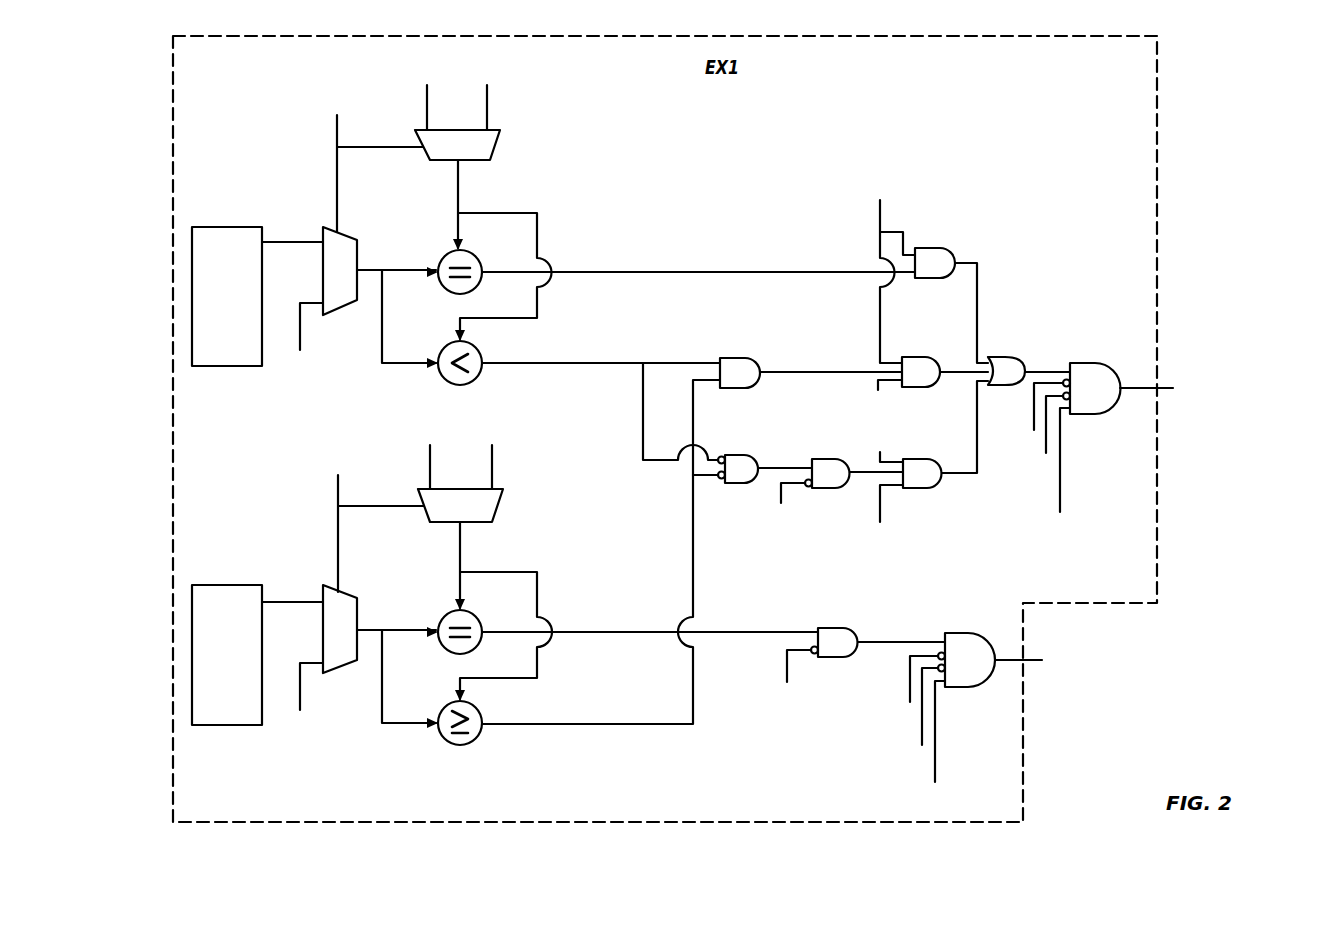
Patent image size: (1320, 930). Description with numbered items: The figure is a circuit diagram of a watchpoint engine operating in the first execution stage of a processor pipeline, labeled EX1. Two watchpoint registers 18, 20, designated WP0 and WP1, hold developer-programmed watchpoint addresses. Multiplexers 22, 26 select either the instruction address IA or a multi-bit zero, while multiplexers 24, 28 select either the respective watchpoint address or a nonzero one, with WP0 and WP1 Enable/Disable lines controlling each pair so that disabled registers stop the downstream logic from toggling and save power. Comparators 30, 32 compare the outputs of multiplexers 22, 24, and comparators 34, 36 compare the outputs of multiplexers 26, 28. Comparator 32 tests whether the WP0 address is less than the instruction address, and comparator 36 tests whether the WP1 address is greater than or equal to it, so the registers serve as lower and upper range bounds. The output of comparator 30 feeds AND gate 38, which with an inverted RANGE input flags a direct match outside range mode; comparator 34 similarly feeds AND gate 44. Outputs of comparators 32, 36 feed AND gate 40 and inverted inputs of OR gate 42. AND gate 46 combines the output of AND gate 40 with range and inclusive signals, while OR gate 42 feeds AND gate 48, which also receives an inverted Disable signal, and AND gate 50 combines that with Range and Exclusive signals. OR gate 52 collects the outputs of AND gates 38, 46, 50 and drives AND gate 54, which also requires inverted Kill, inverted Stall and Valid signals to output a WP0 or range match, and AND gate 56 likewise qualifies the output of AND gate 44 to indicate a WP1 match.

The watchpoint register 18 is at (222, 228).
The watchpoint register 20 is at (222, 586).
The multiplexer 22 is at (493, 131).
The multiplexer 24 is at (345, 232).
The multiplexer 26 is at (496, 490).
The multiplexer 28 is at (345, 590).
The comparator 30 is at (478, 258).
The comparator 32 is at (478, 350).
The comparator 34 is at (478, 618).
The comparator 36 is at (478, 709).
The AND gate 38 is at (940, 248).
The AND gate 40 is at (745, 358).
The OR gate 42 is at (748, 455).
The AND gate 44 is at (838, 628).
The AND gate 46 is at (925, 357).
The AND gate 48 is at (822, 488).
The AND gate 50 is at (915, 488).
The OR gate 52 is at (1008, 357).
The AND gate 54 is at (1092, 363).
The AND gate 56 is at (965, 633).